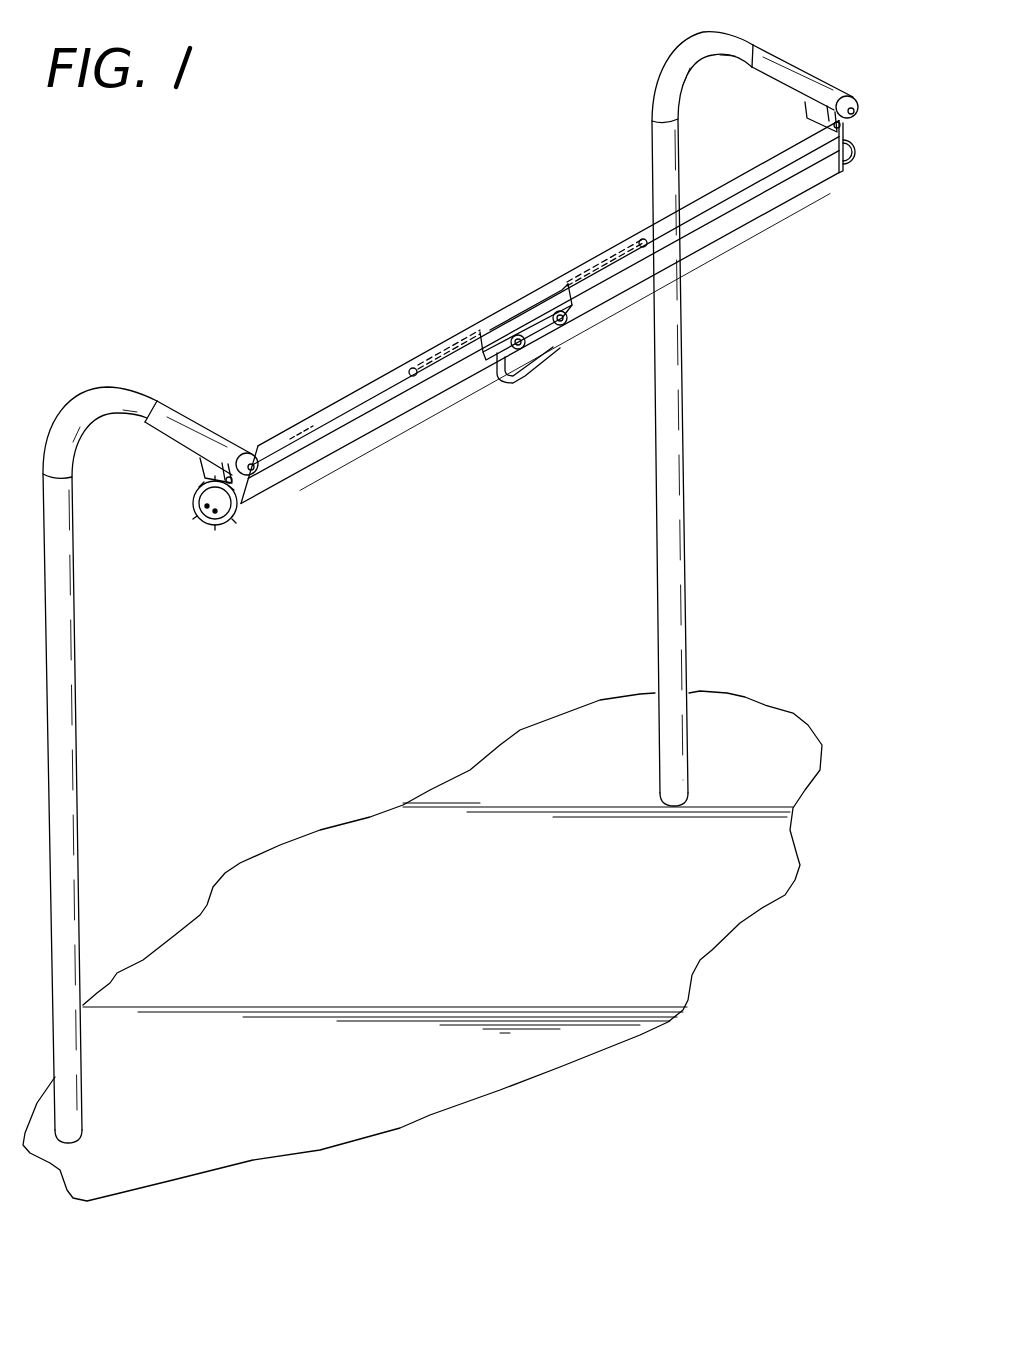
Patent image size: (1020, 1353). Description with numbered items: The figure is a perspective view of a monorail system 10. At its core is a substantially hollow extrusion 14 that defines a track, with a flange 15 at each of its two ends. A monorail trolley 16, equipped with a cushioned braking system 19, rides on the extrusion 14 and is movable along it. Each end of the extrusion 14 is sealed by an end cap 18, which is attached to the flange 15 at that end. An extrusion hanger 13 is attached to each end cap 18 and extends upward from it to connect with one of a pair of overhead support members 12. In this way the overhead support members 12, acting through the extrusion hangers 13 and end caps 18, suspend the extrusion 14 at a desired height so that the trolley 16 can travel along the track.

The monorail system 10 is at (487, 204).
The overhead support member 12 is at (75, 790).
The extrusion hanger 13 is at (200, 470).
The extrusion 14 is at (338, 423).
The flange 15 is at (238, 512).
The monorail trolley 16 is at (532, 328).
The end cap 18 is at (220, 522).
The cushioned braking system 19 is at (554, 278).